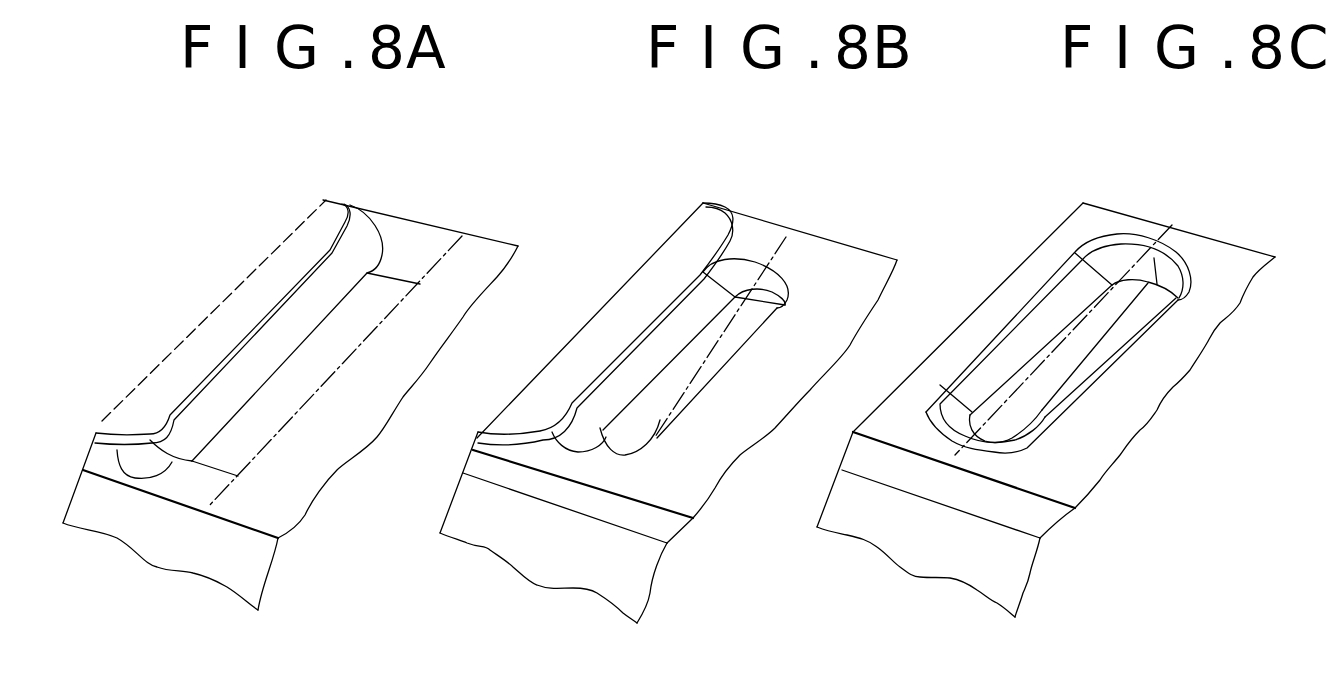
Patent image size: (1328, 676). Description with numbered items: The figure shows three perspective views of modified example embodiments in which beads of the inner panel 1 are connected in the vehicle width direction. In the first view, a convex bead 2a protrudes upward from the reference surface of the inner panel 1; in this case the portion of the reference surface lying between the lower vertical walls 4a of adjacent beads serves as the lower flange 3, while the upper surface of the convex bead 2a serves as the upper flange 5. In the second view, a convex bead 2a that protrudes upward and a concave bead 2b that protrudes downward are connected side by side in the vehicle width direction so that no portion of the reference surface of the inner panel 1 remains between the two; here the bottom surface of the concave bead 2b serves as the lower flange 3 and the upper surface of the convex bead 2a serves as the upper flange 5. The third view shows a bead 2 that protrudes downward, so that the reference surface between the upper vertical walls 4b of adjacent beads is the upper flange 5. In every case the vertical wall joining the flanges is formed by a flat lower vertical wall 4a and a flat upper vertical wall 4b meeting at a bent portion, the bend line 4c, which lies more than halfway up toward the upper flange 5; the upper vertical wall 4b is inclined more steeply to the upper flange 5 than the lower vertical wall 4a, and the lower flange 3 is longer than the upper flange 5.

In FIG. 8A, the inner panel 1 is at (430, 240).
In FIG. 8B, the inner panel 1 is at (841, 260).
In FIG. 8C, the inner panel 1 is at (1215, 247).
In FIG. 8C, the bead 2 is at (1073, 440).
In FIG. 8A, the convex bead 2a is at (166, 338).
In FIG. 8B, the convex bead 2a is at (518, 418).
In FIG. 8B, the concave bead 2b is at (715, 370).
In FIG. 8A, the lower flange 3 is at (262, 424).
In FIG. 8B, the lower flange 3 is at (660, 425).
In FIG. 8C, the lower flange 3 is at (1078, 378).
In FIG. 8A, the lower vertical wall 4a is at (190, 430).
In FIG. 8B, the lower vertical wall 4a is at (603, 403).
In FIG. 8C, the lower vertical wall 4a is at (1045, 320).
In FIG. 8A, the upper vertical wall 4b is at (172, 452).
In FIG. 8B, the upper vertical wall 4b is at (563, 412).
In FIG. 8C, the upper vertical wall 4b is at (1043, 287).
In FIG. 8A, the bend line 4c is at (116, 448).
In FIG. 8B, the bend line 4c is at (640, 327).
In FIG. 8C, the bend line 4c is at (1018, 312).
In FIG. 8A, the upper flange 5 is at (147, 400).
In FIG. 8B, the upper flange 5 is at (562, 383).
In FIG. 8C, the upper flange 5 is at (1215, 272).